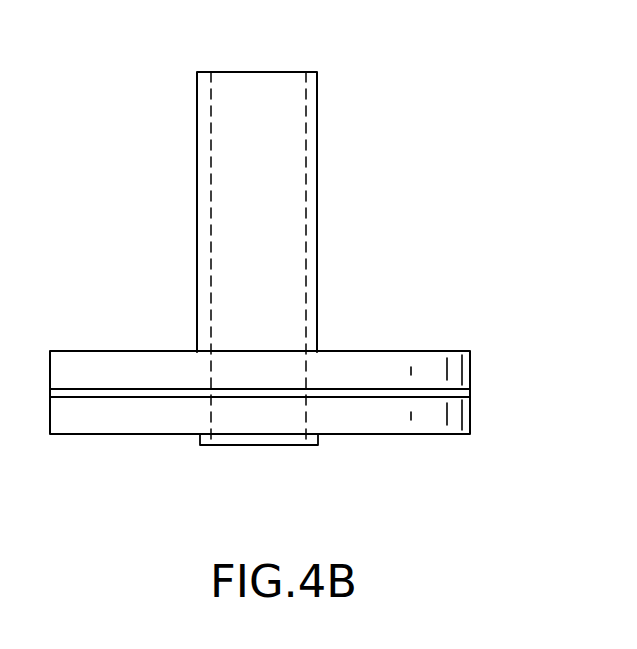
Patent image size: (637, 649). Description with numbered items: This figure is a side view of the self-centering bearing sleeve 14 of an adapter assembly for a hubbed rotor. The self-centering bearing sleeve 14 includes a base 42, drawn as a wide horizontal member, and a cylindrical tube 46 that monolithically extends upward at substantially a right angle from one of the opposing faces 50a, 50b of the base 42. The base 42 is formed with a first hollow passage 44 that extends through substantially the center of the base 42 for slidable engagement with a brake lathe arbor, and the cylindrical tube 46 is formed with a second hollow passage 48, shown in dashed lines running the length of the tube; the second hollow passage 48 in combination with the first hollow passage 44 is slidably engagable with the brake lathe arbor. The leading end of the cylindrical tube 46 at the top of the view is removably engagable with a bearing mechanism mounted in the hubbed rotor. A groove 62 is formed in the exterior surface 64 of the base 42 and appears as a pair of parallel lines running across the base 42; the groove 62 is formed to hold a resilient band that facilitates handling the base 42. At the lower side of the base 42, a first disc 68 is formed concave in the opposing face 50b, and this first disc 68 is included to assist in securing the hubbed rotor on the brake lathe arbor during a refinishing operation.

The self-centering bearing sleeve 14 is at (487, 157).
The base 42 is at (85, 350).
The first hollow passage 44 is at (227, 425).
The cylindrical tube 46 is at (197, 160).
The second hollow passage 48 is at (277, 85).
The opposing face 50a is at (434, 350).
The opposing face 50b is at (72, 437).
The groove 62 is at (470, 388).
The exterior surface 64 is at (470, 422).
The first disc 68 is at (272, 446).